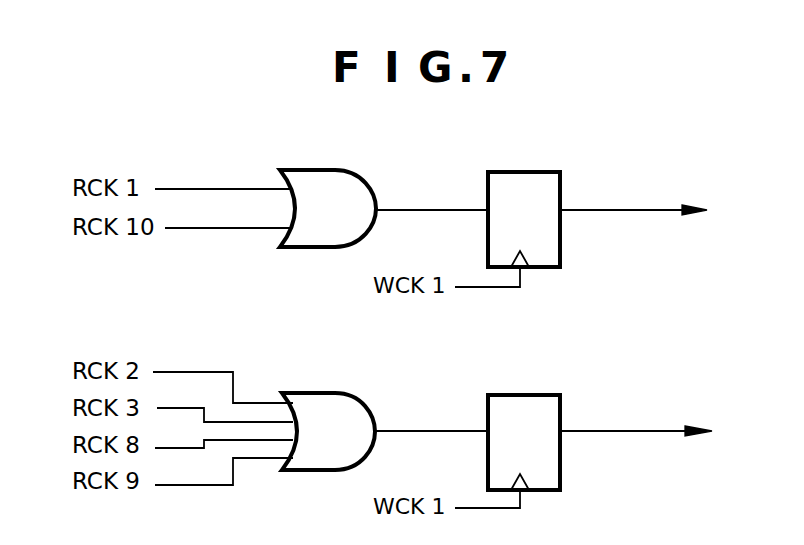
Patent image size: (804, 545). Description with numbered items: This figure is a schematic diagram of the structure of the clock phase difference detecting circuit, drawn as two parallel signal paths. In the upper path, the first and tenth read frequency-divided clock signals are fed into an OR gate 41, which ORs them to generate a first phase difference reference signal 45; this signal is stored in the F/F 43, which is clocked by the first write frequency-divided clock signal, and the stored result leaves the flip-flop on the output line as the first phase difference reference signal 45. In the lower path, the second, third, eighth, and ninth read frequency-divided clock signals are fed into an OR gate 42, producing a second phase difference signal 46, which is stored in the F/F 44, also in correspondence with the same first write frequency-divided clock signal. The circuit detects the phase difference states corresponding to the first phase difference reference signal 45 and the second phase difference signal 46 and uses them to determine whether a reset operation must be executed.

The OR gate 41 is at (337, 170).
The OR gate 42 is at (340, 393).
The F/F 43 is at (533, 172).
The F/F 44 is at (530, 395).
The first phase difference reference signal 45 is at (651, 210).
The second phase difference signal 46 is at (648, 431).